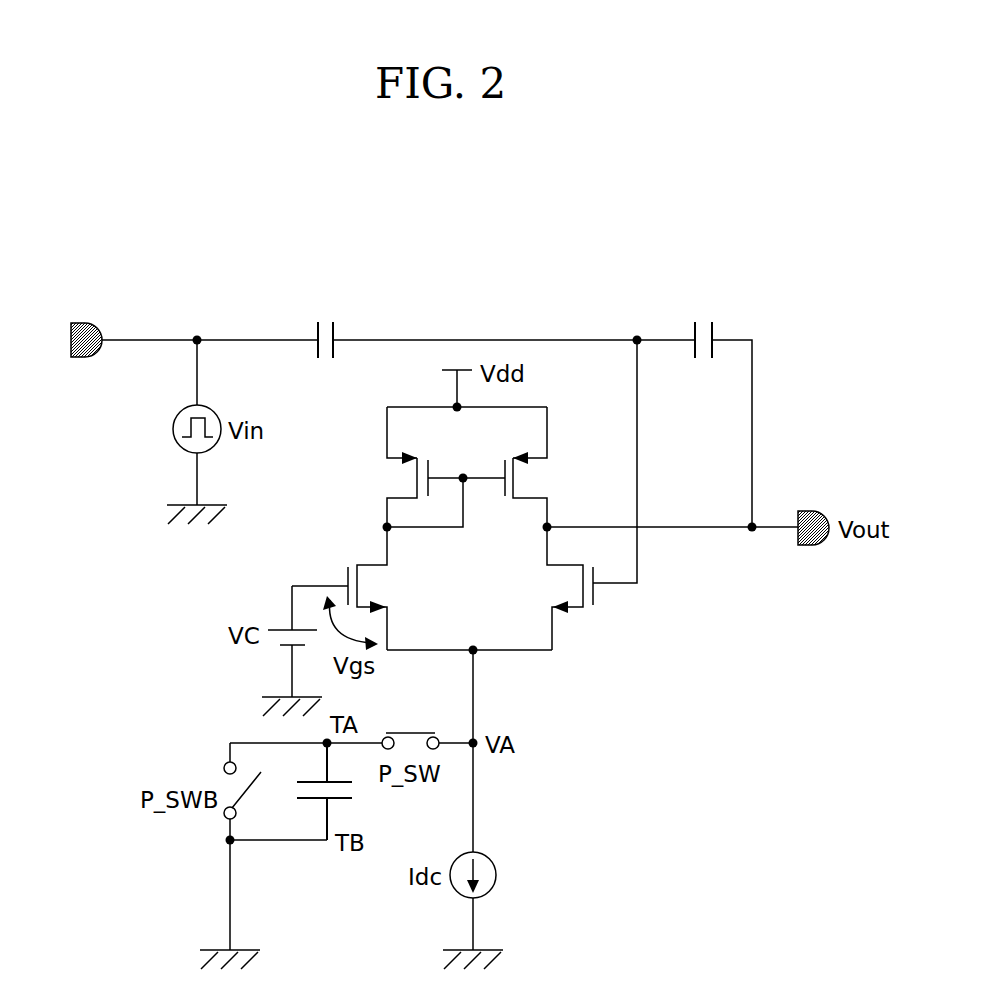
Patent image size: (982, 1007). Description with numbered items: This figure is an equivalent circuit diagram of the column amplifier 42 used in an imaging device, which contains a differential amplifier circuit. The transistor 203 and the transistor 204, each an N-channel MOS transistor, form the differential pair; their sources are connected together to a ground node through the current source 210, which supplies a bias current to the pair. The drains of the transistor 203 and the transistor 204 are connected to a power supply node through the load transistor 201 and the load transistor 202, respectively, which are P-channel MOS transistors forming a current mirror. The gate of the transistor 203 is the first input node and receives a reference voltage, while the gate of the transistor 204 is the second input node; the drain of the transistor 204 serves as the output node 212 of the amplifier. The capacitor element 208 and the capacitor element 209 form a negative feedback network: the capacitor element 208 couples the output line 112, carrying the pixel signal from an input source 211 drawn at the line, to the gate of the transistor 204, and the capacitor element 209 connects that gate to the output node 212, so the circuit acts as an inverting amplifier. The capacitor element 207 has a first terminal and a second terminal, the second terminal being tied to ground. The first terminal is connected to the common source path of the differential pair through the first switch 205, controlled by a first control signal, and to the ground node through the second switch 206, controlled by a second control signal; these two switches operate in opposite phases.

The column amplifier 42 is at (678, 236).
The output line 112 is at (82, 322).
The load transistor 201 is at (396, 474).
The load transistor 202 is at (543, 479).
The transistor 203 is at (378, 582).
The transistor 204 is at (558, 584).
The first switch 205 is at (413, 732).
The second switch 206 is at (228, 784).
The capacitor element 207 is at (352, 792).
The capacitor element 208 is at (328, 321).
The capacitor element 209 is at (702, 324).
The current source 210 is at (516, 852).
The input voltage source 211 is at (175, 421).
The output node 212 is at (813, 548).